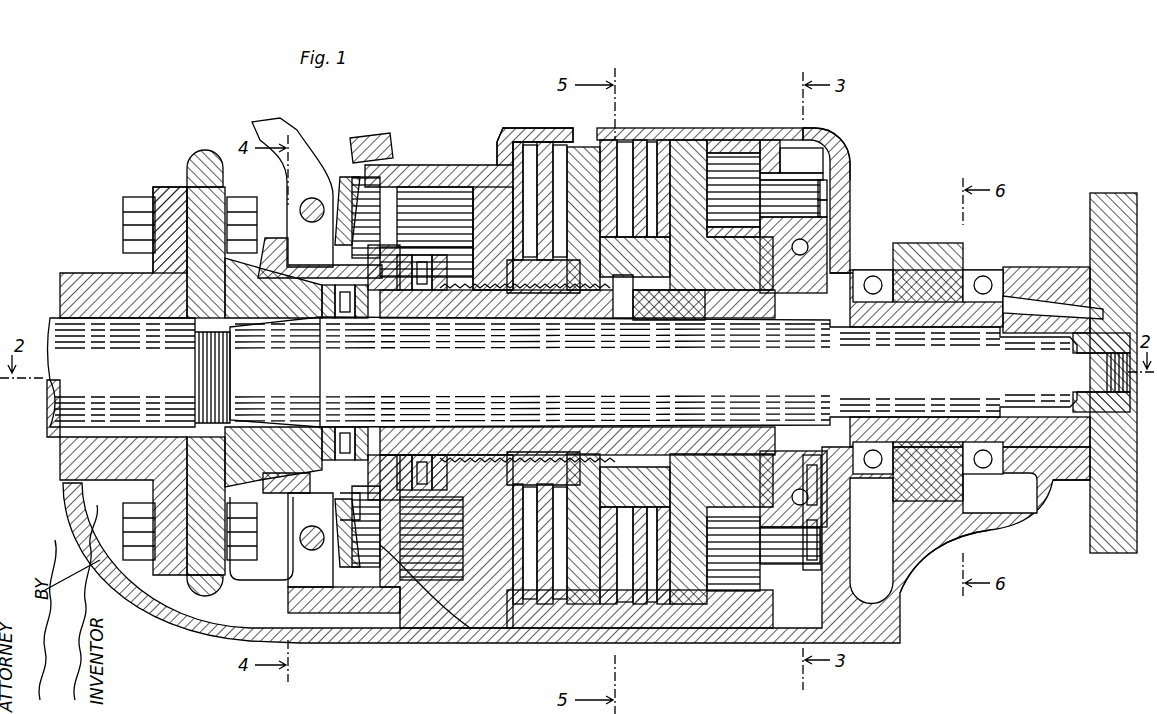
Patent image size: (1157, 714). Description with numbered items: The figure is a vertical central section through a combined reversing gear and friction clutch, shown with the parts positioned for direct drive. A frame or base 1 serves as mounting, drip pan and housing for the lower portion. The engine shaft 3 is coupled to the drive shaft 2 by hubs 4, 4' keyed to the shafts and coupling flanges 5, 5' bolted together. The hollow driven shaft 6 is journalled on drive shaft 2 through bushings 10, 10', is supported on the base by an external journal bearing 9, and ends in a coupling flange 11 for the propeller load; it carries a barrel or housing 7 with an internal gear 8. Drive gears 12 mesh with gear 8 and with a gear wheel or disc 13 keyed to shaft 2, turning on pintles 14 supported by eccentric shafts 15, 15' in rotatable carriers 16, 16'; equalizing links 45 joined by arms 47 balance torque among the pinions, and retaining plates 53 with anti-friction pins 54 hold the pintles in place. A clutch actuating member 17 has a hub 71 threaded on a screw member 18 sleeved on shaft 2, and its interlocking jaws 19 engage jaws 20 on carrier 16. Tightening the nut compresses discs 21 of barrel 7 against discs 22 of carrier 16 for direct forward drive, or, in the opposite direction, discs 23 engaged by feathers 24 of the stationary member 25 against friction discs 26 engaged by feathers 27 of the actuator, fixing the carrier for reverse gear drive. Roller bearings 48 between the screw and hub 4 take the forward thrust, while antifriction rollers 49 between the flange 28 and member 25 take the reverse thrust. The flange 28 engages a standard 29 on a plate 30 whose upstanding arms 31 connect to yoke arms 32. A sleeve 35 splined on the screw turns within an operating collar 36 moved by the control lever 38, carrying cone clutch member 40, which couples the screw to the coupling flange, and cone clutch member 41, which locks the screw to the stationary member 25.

The frame or base 1 is at (507, 644).
The drive shaft 2 is at (680, 372).
The shaft 3 is at (122, 372).
The coupling hub 4 is at (297, 372).
The coupling hub 4' is at (123, 381).
The coupling flange 5 is at (192, 358).
The coupling flange 5' is at (156, 216).
The driven shaft 6 is at (1023, 320).
The barrel or housing 7 is at (832, 132).
The internal gear 8 is at (787, 140).
The external journal bearing 9 is at (967, 280).
The bushing or bearing 10 is at (945, 531).
The bushing or bearing 10' is at (1071, 503).
The coupling flange 11 is at (1097, 195).
The drive gears 12 is at (720, 157).
The gear wheel or disc 13 is at (850, 235).
The pintles 14 is at (763, 372).
The shaft 15 is at (725, 123).
The stub shaft 15' is at (828, 159).
The rotatable carrier 16 is at (640, 384).
The rotatable carrier 16' is at (840, 346).
The clutch actuating member 17 is at (580, 150).
The screw threaded member 18 is at (453, 307).
The interlocking jaws 19 is at (640, 263).
The interlocking jaws 20 is at (645, 425).
The clutch discs 21 is at (660, 140).
The clutch discs 22 is at (627, 140).
The clutch discs 23 is at (557, 140).
The feathers 24 is at (520, 140).
The stationary member 25 is at (500, 157).
The friction discs 26 is at (513, 177).
The feathers 27 is at (530, 292).
The flange 28 is at (353, 500).
The standard 29 is at (423, 567).
The plate 30 is at (333, 607).
The upstanding arms 31 is at (290, 593).
The yoke arms 32 is at (352, 145).
The sleeve 35 is at (285, 230).
The operating collar 36 is at (293, 533).
The control lever 38 is at (265, 122).
The cone clutch member 40 is at (205, 152).
The cone clutch member 41 is at (350, 178).
The equalizing links 45 is at (837, 240).
The arms 47 is at (810, 510).
The roller bearings 48 is at (344, 318).
The antifriction rollers 49 is at (408, 293).
The retaining plates 53 is at (830, 167).
The anti-friction pins 54 is at (827, 190).
The hub 71 is at (580, 292).